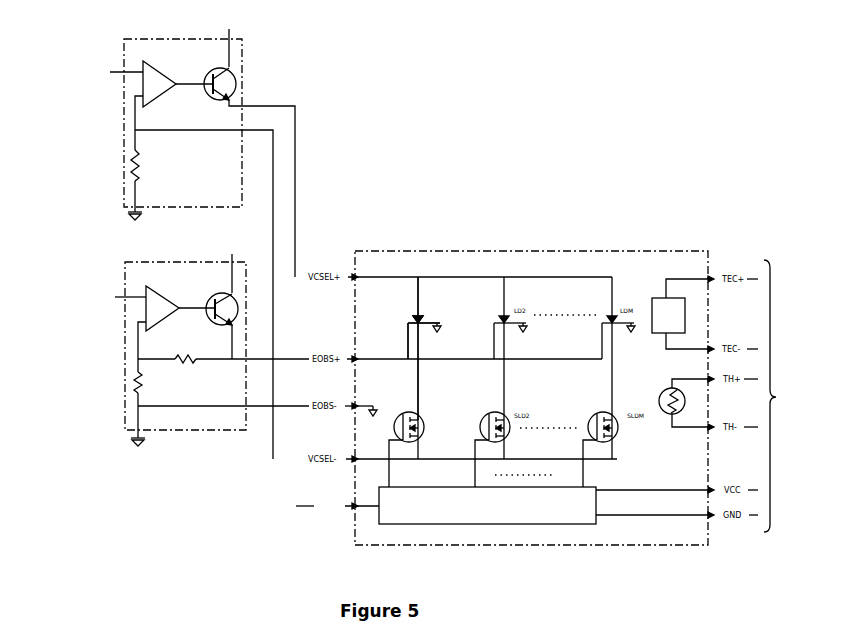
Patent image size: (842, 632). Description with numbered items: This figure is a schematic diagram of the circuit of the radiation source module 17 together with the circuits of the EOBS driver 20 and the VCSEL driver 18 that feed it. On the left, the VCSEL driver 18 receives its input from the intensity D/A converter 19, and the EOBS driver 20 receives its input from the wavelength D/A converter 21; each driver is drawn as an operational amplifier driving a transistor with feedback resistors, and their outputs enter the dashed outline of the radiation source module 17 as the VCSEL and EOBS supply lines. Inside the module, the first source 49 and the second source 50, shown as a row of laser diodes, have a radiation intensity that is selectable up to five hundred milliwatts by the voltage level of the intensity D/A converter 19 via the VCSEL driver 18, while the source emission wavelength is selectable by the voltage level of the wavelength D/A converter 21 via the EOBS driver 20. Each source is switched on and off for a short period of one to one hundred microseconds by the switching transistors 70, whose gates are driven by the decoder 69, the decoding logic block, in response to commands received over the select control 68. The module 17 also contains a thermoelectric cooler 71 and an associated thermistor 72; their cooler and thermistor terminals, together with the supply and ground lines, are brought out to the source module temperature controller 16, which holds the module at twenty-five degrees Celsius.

The source module temperature controller 16 is at (784, 396).
The radiation source module 17 is at (530, 251).
The VCSEL driver 18 is at (180, 36).
The intensity D/A converter 19 is at (75, 78).
The EOBS driver 20 is at (188, 262).
The wavelength D/A converter 21 is at (73, 303).
The source "1" 49 is at (414, 314).
The source "2" 50 is at (410, 348).
The select control 68 is at (355, 509).
The decoder 69 is at (600, 486).
The switching transistors 70 is at (402, 412).
The thermoelectric cooler 71 is at (651, 298).
The thermistor 72 is at (653, 394).